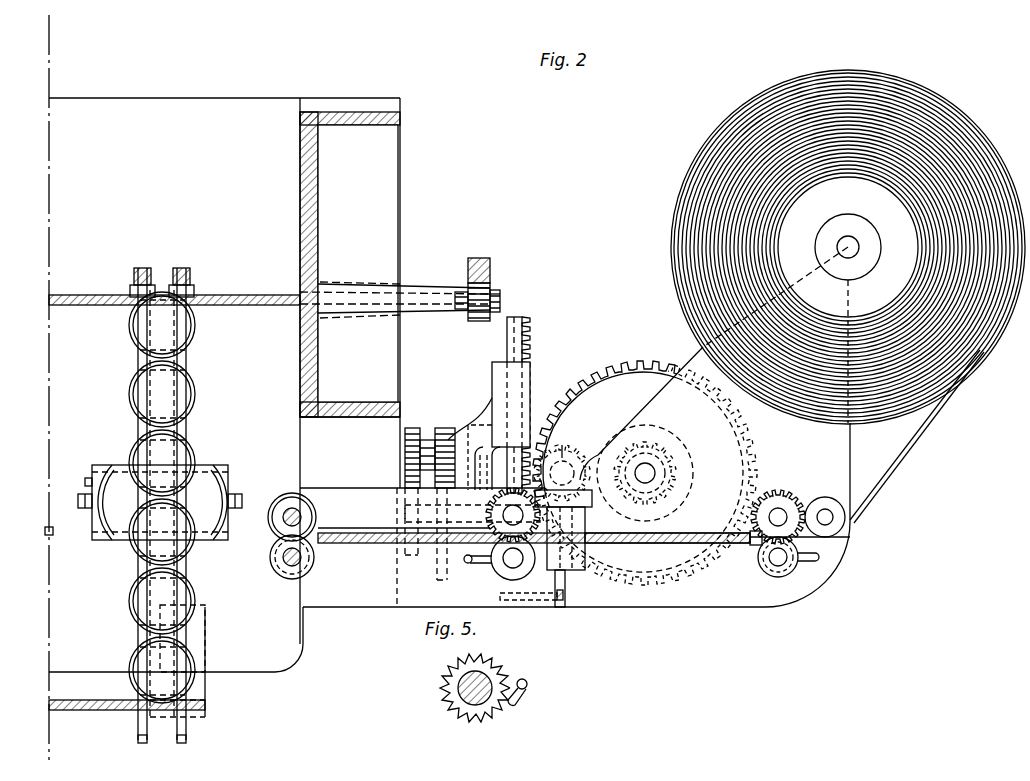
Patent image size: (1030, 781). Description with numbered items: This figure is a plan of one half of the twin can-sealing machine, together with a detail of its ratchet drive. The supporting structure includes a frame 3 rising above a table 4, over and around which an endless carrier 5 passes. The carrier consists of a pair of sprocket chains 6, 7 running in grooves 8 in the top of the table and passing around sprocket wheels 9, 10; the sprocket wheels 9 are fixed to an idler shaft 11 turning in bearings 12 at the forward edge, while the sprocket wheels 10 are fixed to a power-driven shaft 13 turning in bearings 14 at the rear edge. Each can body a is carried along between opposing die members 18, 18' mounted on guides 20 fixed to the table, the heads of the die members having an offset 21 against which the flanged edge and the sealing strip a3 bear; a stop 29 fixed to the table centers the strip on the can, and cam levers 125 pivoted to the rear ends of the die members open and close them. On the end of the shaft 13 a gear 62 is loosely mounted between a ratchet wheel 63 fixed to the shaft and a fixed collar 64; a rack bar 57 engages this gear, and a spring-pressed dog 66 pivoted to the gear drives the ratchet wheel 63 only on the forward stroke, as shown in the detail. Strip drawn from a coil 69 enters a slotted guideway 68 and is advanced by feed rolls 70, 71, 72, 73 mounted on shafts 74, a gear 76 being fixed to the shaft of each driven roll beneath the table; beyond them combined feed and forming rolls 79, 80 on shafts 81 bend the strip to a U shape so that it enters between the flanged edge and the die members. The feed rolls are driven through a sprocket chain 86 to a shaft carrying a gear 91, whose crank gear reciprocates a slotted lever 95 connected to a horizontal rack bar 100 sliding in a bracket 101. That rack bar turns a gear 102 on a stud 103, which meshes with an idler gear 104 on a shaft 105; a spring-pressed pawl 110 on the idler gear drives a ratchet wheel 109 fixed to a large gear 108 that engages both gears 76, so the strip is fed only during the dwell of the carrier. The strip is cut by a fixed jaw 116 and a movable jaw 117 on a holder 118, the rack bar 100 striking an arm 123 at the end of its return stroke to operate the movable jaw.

In FIG. 2, the frame 3 is at (388, 160).
In FIG. 2, the table 4 is at (290, 658).
In FIG. 2, the endless carriers 5 is at (169, 497).
In FIG. 2, the sprocket chain 6 is at (140, 632).
In FIG. 2, the sprocket chain 7 is at (190, 636).
In FIG. 2, the grooves 8 is at (140, 360).
In FIG. 2, the sprocket wheels 9 is at (138, 738).
In FIG. 2, the sprocket wheels 10 is at (142, 268).
In FIG. 2, the idler shaft 11 is at (70, 710).
In FIG. 2, the bearings 12 is at (205, 688).
In FIG. 2, the shaft 13 is at (235, 298).
In FIG. 5, the shaft 13 is at (458, 688).
In FIG. 2, the bearings 14 is at (405, 288).
In FIG. 2, the die member 18 is at (187, 485).
In FIG. 2, the die member 18' is at (78, 459).
In FIG. 2, the guides 20 is at (215, 465).
In FIG. 2, the offset 21 is at (165, 501).
In FIG. 2, the stop 29 is at (46, 530).
In FIG. 2, the rack bar 57 is at (485, 260).
In FIG. 2, the gear 62 is at (476, 322).
In FIG. 2, the ratchet wheel 63 is at (470, 305).
In FIG. 5, the ratchet wheel 63 is at (450, 678).
In FIG. 2, the fixed collar 64 is at (500, 298).
In FIG. 5, the spring-pressed dog 66 is at (528, 689).
In FIG. 2, the guideways 68 is at (370, 545).
In FIG. 2, the coil 69 is at (985, 355).
In FIG. 2, the feed roll 70 is at (510, 560).
In FIG. 2, the feed roll 71 is at (490, 512).
In FIG. 2, the feed roll 72 is at (800, 580).
In FIG. 2, the feed roll 73 is at (812, 500).
In FIG. 2, the shafts 74 is at (510, 540).
In FIG. 2, the gear 76 is at (500, 532).
In FIG. 2, the combined feed and forming roll 79 is at (283, 570).
In FIG. 2, the combined feed and forming roll 80 is at (304, 500).
In FIG. 2, the shaft 81 is at (285, 522).
In FIG. 2, the sprocket chain 86 is at (405, 435).
In FIG. 2, the gear 91 is at (445, 428).
In FIG. 2, the slotted lever 95 is at (470, 420).
In FIG. 2, the rack bar 100 is at (528, 322).
In FIG. 2, the bracket 101 is at (531, 350).
In FIG. 2, the gear 102 is at (578, 432).
In FIG. 2, the stud 103 is at (531, 395).
In FIG. 2, the idler gear 104 is at (690, 434).
In FIG. 2, the shaft or stud 105 is at (648, 468).
In FIG. 2, the gear 108 is at (608, 345).
In FIG. 2, the ratchet wheel 109 is at (633, 410).
In FIG. 2, the spring-pressed pawl 110 is at (683, 471).
In FIG. 2, the fixed jaw 116 is at (586, 515).
In FIG. 2, the movable jaw 117 is at (566, 580).
In FIG. 2, the holder 118 is at (586, 550).
In FIG. 2, the arm 123 is at (540, 602).
In FIG. 2, the cam levers 125 is at (242, 498).
In FIG. 2, the body of the can a is at (165, 394).
In FIG. 2, the sealing strip a3 is at (256, 516).